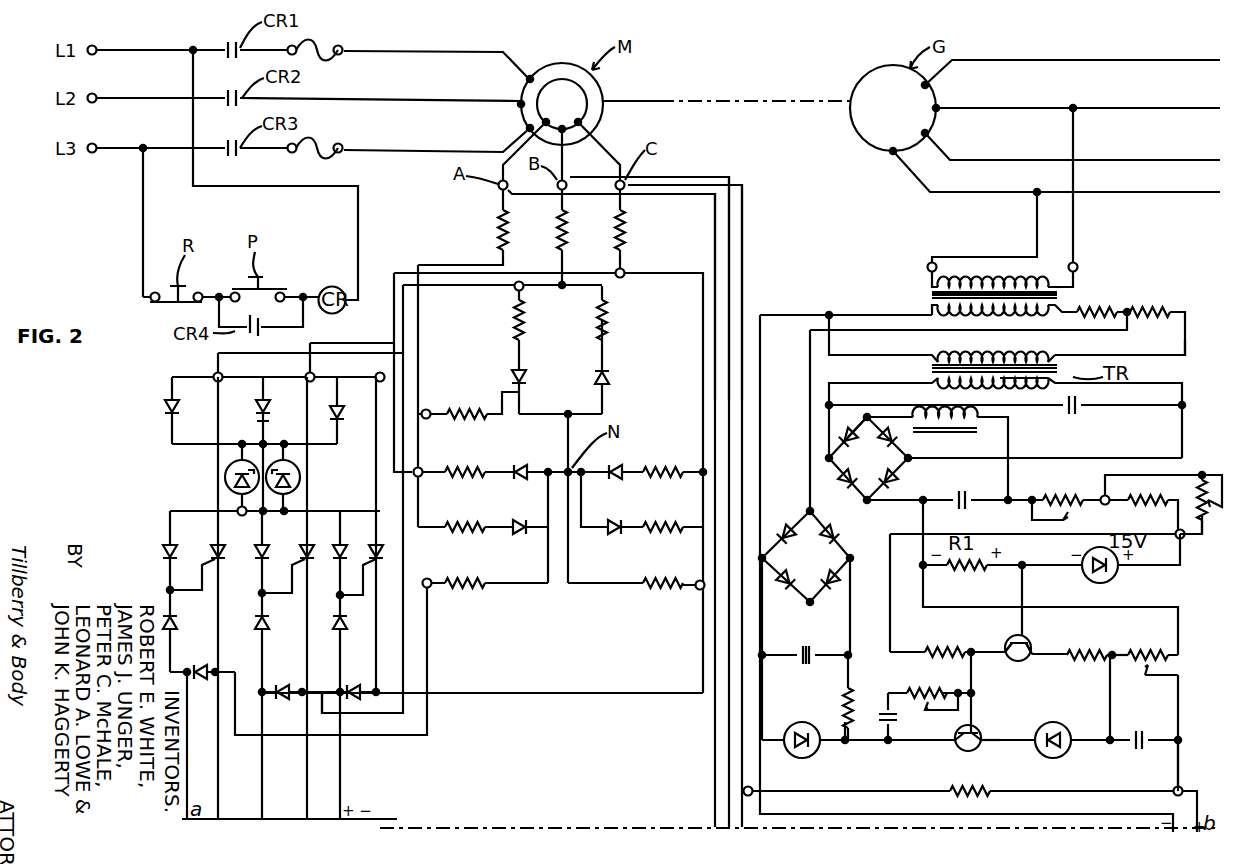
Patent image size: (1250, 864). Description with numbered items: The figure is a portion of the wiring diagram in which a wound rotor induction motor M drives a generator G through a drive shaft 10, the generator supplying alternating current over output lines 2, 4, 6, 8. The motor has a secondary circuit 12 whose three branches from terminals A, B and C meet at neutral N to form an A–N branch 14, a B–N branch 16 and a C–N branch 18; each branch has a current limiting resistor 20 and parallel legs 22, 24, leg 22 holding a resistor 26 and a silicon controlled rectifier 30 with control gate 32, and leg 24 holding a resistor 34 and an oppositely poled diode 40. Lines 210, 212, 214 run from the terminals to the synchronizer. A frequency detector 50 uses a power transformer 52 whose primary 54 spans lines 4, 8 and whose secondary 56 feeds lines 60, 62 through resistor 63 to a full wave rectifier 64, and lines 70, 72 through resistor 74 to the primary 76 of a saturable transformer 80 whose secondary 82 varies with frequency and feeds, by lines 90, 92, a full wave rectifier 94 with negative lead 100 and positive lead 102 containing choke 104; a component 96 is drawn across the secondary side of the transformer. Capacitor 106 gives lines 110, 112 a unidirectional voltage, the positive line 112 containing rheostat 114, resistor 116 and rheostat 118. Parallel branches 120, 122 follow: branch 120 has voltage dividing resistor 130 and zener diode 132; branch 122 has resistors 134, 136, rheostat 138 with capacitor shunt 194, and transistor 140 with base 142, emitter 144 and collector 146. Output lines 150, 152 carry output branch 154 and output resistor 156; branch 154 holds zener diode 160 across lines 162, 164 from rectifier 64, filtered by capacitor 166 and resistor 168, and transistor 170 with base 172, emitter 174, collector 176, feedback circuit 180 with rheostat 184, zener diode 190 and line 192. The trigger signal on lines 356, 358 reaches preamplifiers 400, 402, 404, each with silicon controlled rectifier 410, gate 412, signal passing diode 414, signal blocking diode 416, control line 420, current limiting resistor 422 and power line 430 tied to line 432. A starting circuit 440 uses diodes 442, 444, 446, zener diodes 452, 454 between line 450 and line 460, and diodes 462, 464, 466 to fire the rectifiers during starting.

The output line 2 is at (1021, 62).
The output line 4 is at (1002, 108).
The output line 6 is at (998, 158).
The output line 8 is at (990, 192).
The drive shaft 10 is at (737, 101).
The secondary circuit 12 is at (464, 234).
The A–N branch 14 is at (482, 457).
The B–N branch 16 is at (630, 342).
The C–N branch 18 is at (650, 448).
The current limiting resistor 20 is at (506, 236).
The leg 22 is at (513, 328).
The leg 24 is at (605, 316).
The resistor 26 is at (627, 238).
The silicon controlled rectifier 30 is at (525, 376).
The control gate 32 is at (515, 386).
The resistor 34 is at (605, 336).
The diode 40 is at (609, 374).
The frequency detector 50 is at (1204, 340).
The power transformer 52 is at (1085, 284).
The primary 54 is at (966, 275).
The secondary 56 is at (1075, 311).
The line 60 is at (790, 312).
The line 62 is at (810, 355).
The resistor 63 is at (1129, 310).
The full wave rectifier 64 is at (795, 525).
The line 70 is at (887, 351).
The line 72 is at (1131, 355).
The resistor 74 is at (1176, 306).
The primary 76 is at (934, 293).
The saturable transformer 80 is at (915, 358).
The secondary 82 is at (1030, 387).
The line 90 is at (829, 386).
The line 92 is at (1184, 403).
The full wave rectifier 94 is at (862, 410).
The capacitor 96 is at (1075, 407).
The negative output lead 100 is at (903, 500).
The positive output lead 102 is at (918, 428).
The choke 104 is at (963, 435).
The capacitor 106 is at (957, 496).
The line 110 is at (923, 512).
The positive line 112 is at (1095, 498).
The rheostat 114 is at (1051, 490).
The resistor 116 is at (1150, 503).
The rheostat 118 is at (1208, 526).
The branch 120 is at (1032, 571).
The branch 122 is at (978, 640).
The voltage dividing resistor 130 is at (967, 577).
The zener diode 132 is at (1110, 579).
The resistor 134 is at (932, 648).
The resistor 136 is at (1111, 657).
The rheostat 138 is at (1142, 652).
The transistor 140 is at (1037, 637).
The base 142 is at (1010, 653).
The emitter 144 is at (1030, 656).
The collector 146 is at (1030, 664).
The negative output line 150 is at (1129, 814).
The positive output line 152 is at (1185, 790).
The output branch 154 is at (914, 751).
The output resistor 156 is at (983, 794).
The zener diode 160 is at (813, 758).
The line 162 is at (764, 613).
The line 164 is at (848, 615).
The capacitor 166 is at (805, 660).
The resistor 168 is at (848, 690).
The transistor 170 is at (968, 757).
The base 172 is at (979, 730).
The emitter 174 is at (983, 748).
The collector 176 is at (952, 736).
The collector to base feedback circuit 180 is at (900, 691).
The rheostat 184 is at (940, 668).
The zener diode 190 is at (1056, 758).
The line 192 is at (1111, 690).
The capacitor shunt 194 is at (1144, 728).
The line 210 is at (670, 196).
The line 212 is at (683, 185).
The line 214 is at (720, 177).
The line 356 is at (338, 777).
The line 358 is at (373, 803).
The preamplifier 400 is at (370, 626).
The preamplifier 402 is at (271, 661).
The preamplifier 404 is at (185, 618).
The silicon controlled rectifier 410 is at (375, 540).
The gate 412 is at (396, 574).
The signal passing diode 414 is at (337, 637).
The signal blocking diode 416 is at (377, 682).
The control line 420 is at (473, 695).
The current limiting resistor 422 is at (657, 594).
The power line 430 is at (380, 436).
The line 432 is at (393, 273).
The starting circuit 440 is at (159, 444).
The diode 442 is at (172, 407).
The diode 444 is at (263, 405).
The diode 446 is at (337, 408).
The line 450 is at (203, 446).
The zener diode 452 is at (240, 460).
The zener diode 454 is at (285, 460).
The line 460 is at (182, 508).
The diode 462 is at (162, 552).
The diode 464 is at (262, 552).
The diode 466 is at (329, 508).